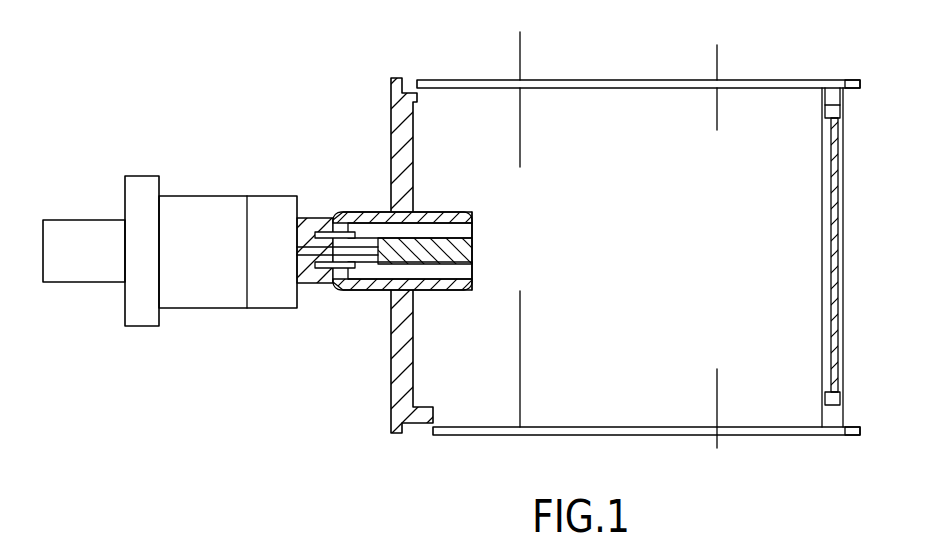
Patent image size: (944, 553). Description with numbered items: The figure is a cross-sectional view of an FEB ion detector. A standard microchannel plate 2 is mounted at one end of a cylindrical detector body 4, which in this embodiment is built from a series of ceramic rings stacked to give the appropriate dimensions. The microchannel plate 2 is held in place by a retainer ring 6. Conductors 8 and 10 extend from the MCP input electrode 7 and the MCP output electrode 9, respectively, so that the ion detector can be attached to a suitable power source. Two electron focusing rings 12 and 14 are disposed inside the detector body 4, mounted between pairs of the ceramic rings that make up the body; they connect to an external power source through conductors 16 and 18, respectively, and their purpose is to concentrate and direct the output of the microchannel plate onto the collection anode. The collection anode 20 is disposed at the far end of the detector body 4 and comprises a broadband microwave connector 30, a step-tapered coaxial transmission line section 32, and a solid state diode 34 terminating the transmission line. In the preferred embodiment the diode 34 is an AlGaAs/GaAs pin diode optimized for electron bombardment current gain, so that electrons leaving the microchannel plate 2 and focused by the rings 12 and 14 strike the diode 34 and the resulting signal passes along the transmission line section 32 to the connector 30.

The microchannel plate 2 is at (838, 328).
The detector body 4 is at (607, 436).
The retainer ring 6 is at (850, 436).
The MCP input electrode 7 is at (838, 140).
The conductor 8 is at (848, 81).
The MCP output electrode 9 is at (830, 137).
The conductor 10 is at (822, 82).
The electron focusing ring 12 is at (717, 105).
The electron focusing ring 14 is at (521, 122).
The conductor 16 is at (716, 56).
The conductor 18 is at (520, 48).
The collection anode 20 is at (170, 247).
The broadband microwave connector 30 is at (212, 196).
The step-tapered coaxial transmission line section 32 is at (137, 176).
The solid state diode 34 is at (474, 250).